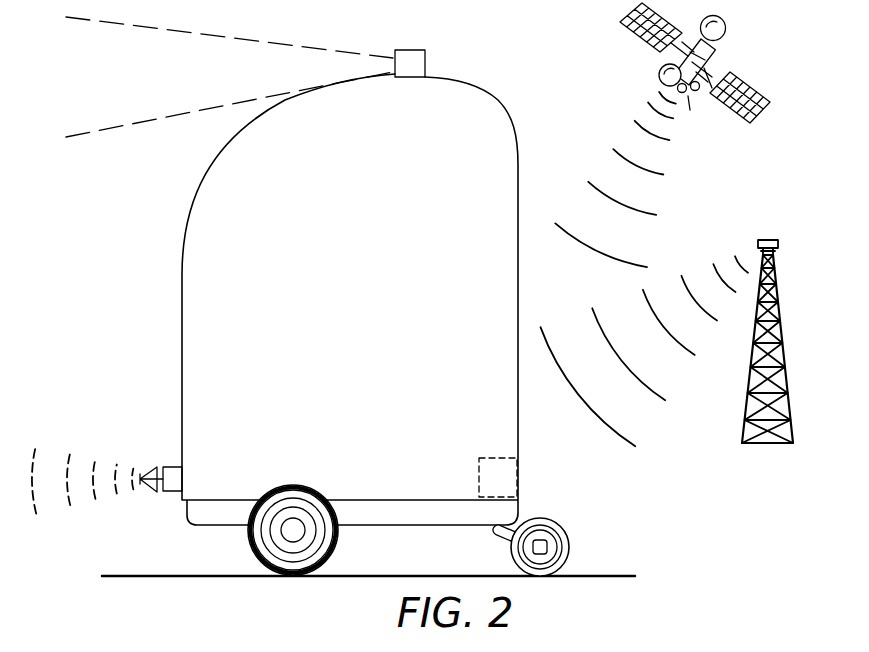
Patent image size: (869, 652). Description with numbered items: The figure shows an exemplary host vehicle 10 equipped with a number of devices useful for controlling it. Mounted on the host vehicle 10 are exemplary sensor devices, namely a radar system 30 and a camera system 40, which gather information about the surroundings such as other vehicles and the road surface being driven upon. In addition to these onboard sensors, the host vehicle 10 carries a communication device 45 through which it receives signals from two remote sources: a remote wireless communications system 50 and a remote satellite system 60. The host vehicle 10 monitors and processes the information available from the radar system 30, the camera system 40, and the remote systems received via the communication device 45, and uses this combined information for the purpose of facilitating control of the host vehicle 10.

The host vehicle 10 is at (497, 132).
The radar system 30 is at (173, 476).
The camera system 40 is at (412, 62).
The communication device 45 is at (502, 478).
The remote wireless communications system 50 is at (767, 241).
The remote satellite system 60 is at (715, 31).